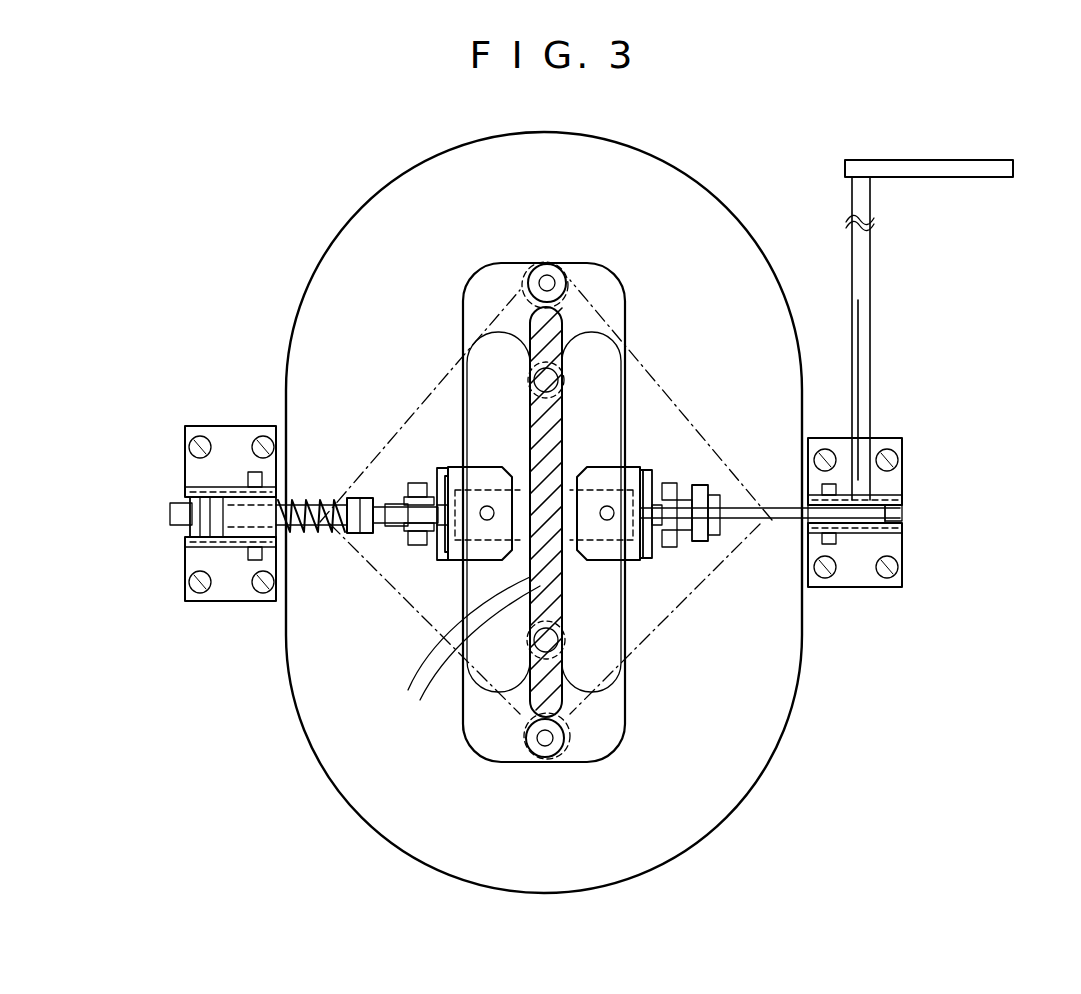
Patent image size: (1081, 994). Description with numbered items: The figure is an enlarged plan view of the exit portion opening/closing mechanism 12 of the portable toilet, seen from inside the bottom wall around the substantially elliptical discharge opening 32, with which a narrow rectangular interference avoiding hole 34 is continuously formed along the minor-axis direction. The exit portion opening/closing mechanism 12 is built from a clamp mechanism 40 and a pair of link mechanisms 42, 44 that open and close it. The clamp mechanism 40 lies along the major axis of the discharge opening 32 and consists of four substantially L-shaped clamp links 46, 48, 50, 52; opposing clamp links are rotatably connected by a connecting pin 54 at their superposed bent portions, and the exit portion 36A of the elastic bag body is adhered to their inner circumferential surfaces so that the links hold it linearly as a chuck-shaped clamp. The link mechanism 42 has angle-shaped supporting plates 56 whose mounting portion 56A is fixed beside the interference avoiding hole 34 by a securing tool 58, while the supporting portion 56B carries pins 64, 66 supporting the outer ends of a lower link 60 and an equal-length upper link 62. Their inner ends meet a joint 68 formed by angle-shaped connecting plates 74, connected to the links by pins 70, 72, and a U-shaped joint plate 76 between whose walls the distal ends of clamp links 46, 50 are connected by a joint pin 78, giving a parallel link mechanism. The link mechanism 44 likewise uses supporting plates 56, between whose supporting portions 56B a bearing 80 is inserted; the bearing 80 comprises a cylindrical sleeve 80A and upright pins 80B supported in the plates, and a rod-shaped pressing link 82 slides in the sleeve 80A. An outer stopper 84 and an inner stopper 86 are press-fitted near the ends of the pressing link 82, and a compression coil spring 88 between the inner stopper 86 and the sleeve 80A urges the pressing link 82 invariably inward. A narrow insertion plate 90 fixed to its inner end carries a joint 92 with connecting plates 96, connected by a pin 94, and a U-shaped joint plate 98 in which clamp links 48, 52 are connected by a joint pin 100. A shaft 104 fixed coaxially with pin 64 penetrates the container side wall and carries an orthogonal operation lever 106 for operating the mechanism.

The exit portion opening/closing mechanism 12 is at (655, 255).
The discharge opening 32 is at (772, 738).
The interference avoiding hole 34 is at (342, 637).
The exit portion of the bag body 36A is at (447, 648).
The clamp mechanism 40 is at (630, 722).
The link mechanism 42 is at (752, 444).
The link mechanism 44 is at (333, 466).
The clamp link 46 is at (612, 325).
The clamp link 48 is at (468, 345).
The clamp link 50 is at (622, 690).
The clamp link 52 is at (477, 717).
The connecting pin 54 is at (548, 278).
The supporting plate 56 is at (180, 427).
The mounting portion 56A is at (197, 424).
The supporting portion 56B is at (187, 457).
The securing tool 58 is at (200, 602).
The lower link 60 is at (892, 518).
The upper link 62 is at (775, 519).
The pin 64 is at (843, 588).
The pin 66 is at (820, 450).
The joint 68 is at (650, 470).
The pin 70 is at (715, 537).
The pin 72 is at (700, 543).
The connecting plate 74 is at (666, 483).
The joint plate 76 is at (560, 640).
The joint pin 78 is at (607, 506).
The bearing 80 is at (268, 336).
The sleeve 80A is at (197, 425).
The pin 80B is at (243, 455).
The pressing link 82 is at (167, 514).
The outer stopper 84 is at (192, 500).
The inner stopper 86 is at (362, 536).
The compression coil spring 88 is at (308, 536).
The insertion plate 90 is at (397, 505).
The joint 92 is at (447, 562).
The pin 94 is at (418, 483).
The connecting plate 96 is at (410, 484).
The joint plate 98 is at (440, 468).
The joint pin 100 is at (487, 506).
The shaft 104 is at (871, 325).
The operation lever 106 is at (950, 180).